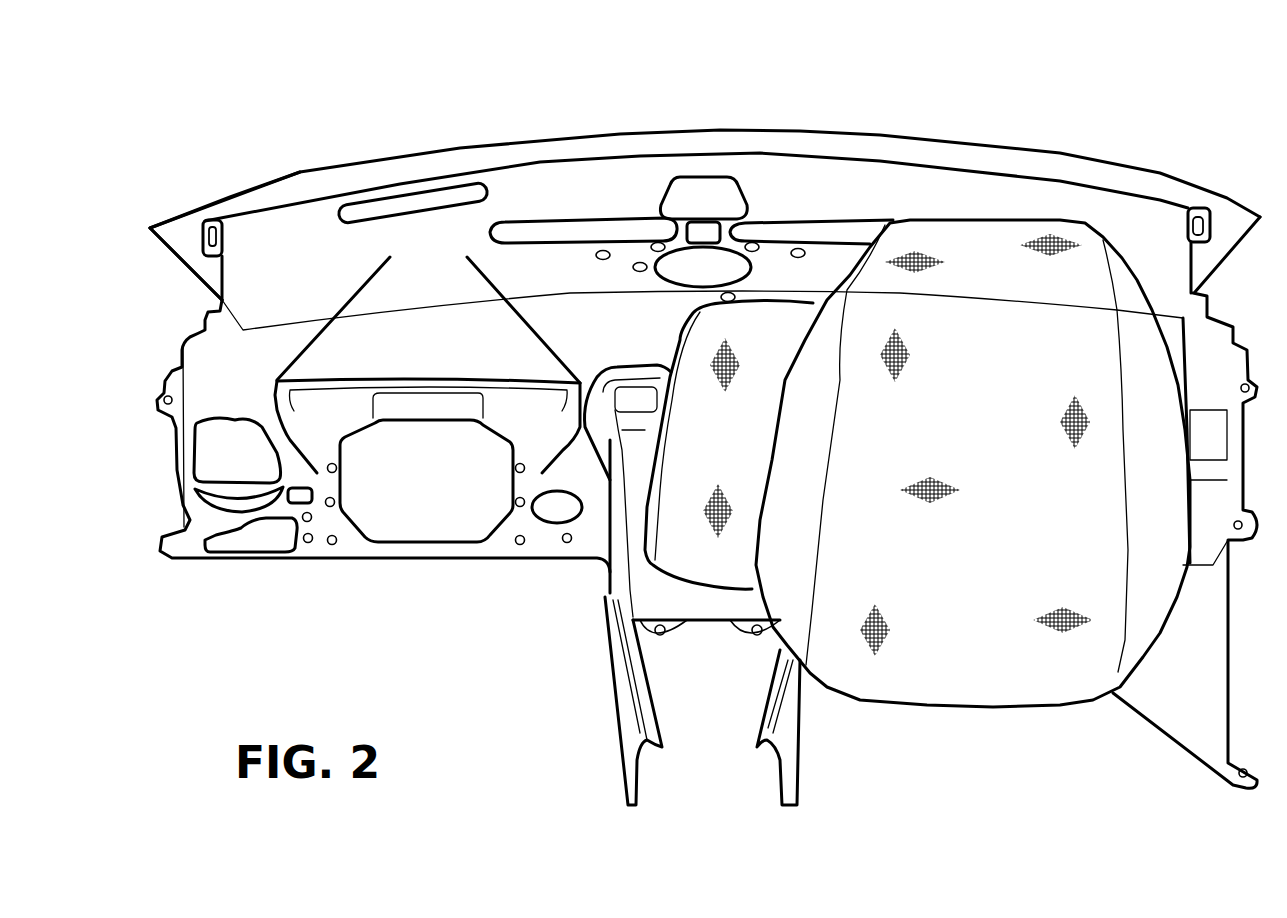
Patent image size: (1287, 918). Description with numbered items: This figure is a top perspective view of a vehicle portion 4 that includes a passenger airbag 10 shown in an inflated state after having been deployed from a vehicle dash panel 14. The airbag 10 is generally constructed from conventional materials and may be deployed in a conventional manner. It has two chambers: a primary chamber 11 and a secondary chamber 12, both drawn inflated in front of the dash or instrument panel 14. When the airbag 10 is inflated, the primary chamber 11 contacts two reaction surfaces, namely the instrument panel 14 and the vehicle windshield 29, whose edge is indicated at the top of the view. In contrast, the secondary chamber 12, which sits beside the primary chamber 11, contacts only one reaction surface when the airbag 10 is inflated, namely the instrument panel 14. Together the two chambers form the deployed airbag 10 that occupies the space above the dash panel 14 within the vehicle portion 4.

The vehicle portion 4 is at (410, 104).
The vehicle windshield 29 is at (151, 226).
The vehicle dash panel 14 is at (477, 359).
The secondary chamber 12 is at (740, 454).
The primary chamber 11 is at (1012, 503).
The passenger airbag 10 is at (1003, 718).